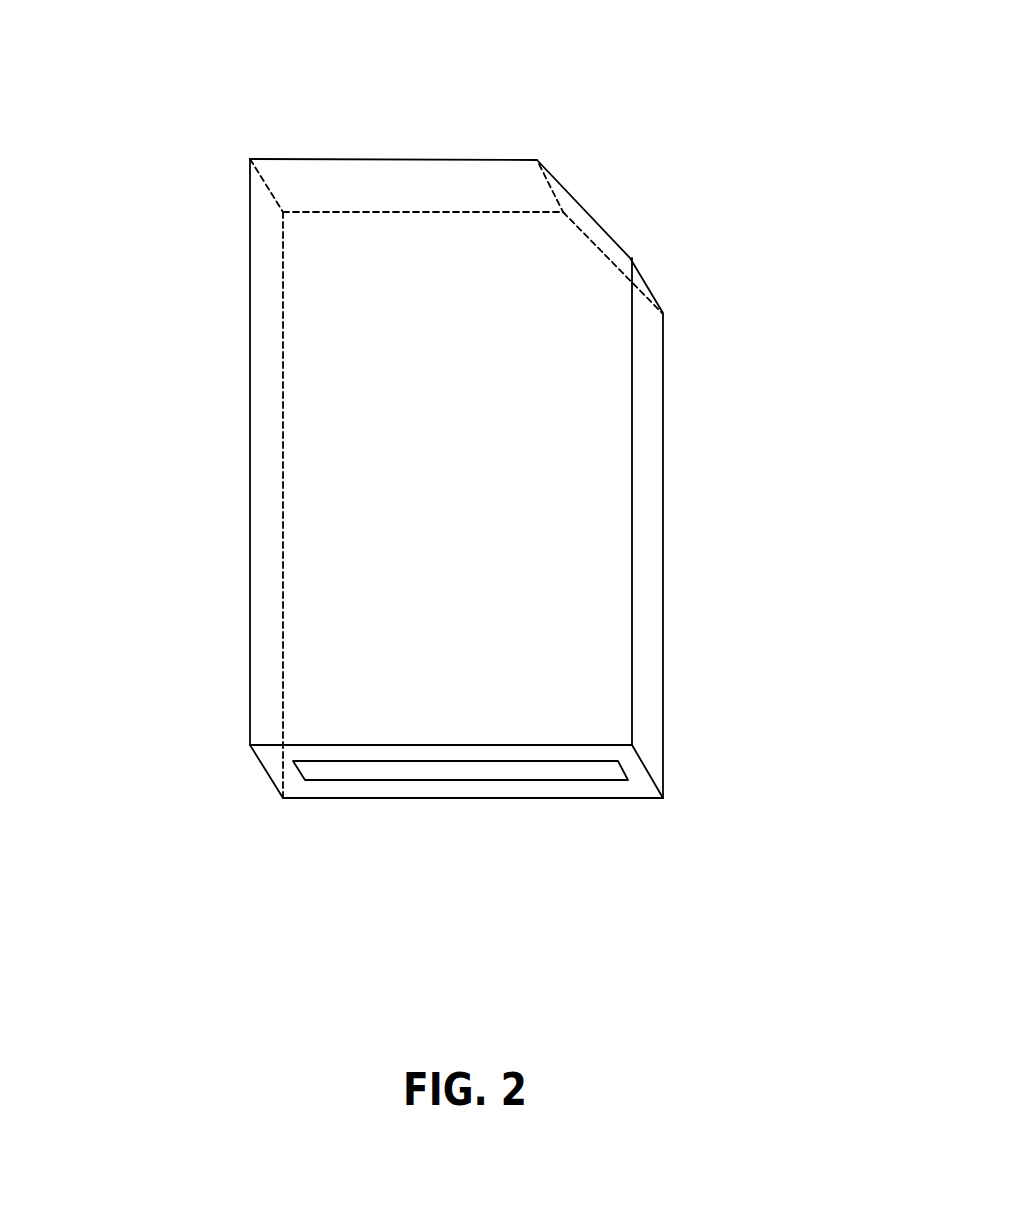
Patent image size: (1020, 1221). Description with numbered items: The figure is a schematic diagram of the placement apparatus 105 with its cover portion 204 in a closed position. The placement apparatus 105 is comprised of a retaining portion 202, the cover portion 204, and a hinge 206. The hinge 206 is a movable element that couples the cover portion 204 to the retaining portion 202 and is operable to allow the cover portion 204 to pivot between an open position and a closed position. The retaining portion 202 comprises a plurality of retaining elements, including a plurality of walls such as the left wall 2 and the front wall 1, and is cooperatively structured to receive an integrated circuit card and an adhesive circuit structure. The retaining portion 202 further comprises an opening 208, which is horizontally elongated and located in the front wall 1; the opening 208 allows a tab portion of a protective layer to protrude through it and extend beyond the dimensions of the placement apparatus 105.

The placement apparatus 105 is at (161, 928).
The hinge 206 is at (448, 143).
The cover portion 204 is at (358, 453).
The retaining portion 202 is at (659, 463).
The left wall 2 is at (267, 565).
The front wall 1 is at (349, 788).
The opening 208 is at (518, 793).